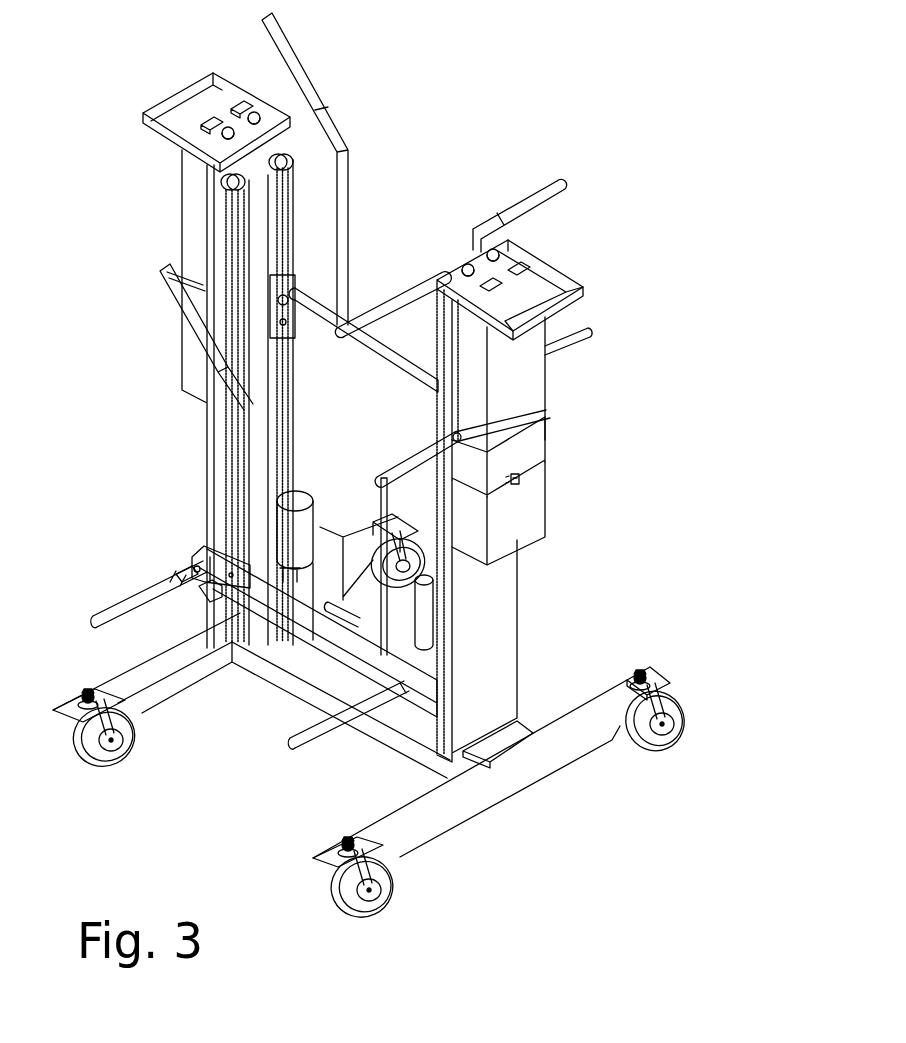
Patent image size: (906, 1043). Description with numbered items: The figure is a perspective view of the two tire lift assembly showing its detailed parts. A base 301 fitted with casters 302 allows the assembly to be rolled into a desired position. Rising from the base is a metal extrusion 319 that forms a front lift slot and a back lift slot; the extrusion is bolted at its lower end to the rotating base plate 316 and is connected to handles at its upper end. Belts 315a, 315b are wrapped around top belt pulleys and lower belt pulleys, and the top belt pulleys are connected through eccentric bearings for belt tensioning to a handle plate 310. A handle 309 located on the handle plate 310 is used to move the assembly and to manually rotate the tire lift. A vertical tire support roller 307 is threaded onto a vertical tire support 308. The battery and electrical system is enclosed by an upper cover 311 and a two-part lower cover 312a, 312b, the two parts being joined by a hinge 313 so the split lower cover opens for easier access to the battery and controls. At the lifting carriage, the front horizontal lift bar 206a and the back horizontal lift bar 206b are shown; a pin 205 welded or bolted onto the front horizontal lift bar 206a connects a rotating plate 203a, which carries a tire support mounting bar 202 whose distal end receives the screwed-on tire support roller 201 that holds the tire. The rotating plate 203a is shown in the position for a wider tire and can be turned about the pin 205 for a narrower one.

The tire support roller 201 is at (133, 602).
The tire support mounting bar 202 is at (187, 568).
The rotating plate 203a is at (200, 568).
The pin 205 is at (206, 588).
The front horizontal lift bar 206a is at (310, 627).
The back horizontal lift bar 206b is at (403, 373).
The base 301 is at (157, 712).
The casters 302 is at (398, 906).
The vertical tire support roller 307 is at (183, 307).
The vertical tire support 308 is at (247, 452).
The handle 309 is at (172, 108).
The handle plate 310 is at (264, 100).
The upper cover 311 is at (514, 392).
The lower cover 312a is at (525, 452).
The lower cover 312b is at (525, 525).
The hinge 313 is at (521, 485).
The belt 315a is at (228, 238).
The belt 315b is at (293, 238).
The rotating base plate 316 is at (510, 723).
The metal extrusion 319 is at (486, 612).